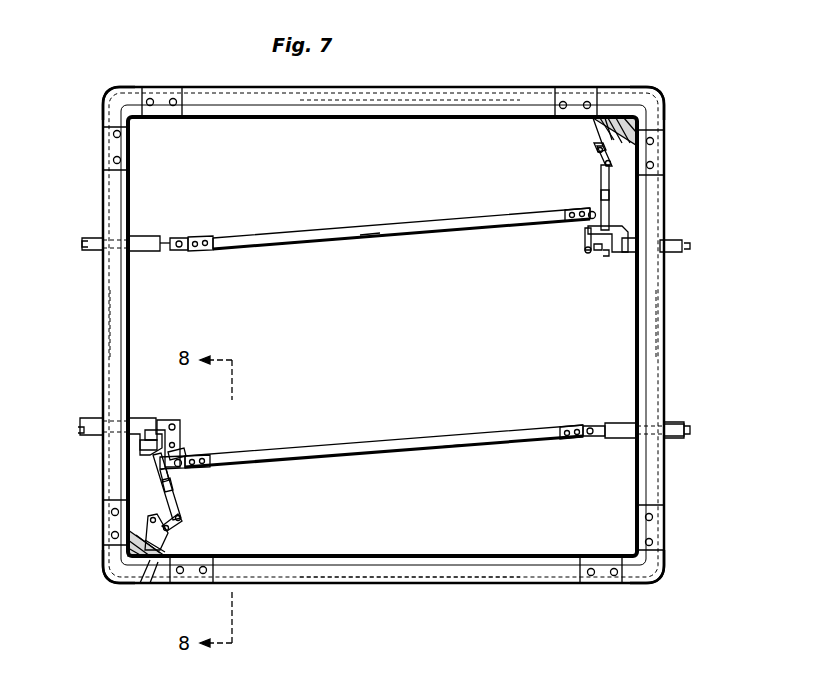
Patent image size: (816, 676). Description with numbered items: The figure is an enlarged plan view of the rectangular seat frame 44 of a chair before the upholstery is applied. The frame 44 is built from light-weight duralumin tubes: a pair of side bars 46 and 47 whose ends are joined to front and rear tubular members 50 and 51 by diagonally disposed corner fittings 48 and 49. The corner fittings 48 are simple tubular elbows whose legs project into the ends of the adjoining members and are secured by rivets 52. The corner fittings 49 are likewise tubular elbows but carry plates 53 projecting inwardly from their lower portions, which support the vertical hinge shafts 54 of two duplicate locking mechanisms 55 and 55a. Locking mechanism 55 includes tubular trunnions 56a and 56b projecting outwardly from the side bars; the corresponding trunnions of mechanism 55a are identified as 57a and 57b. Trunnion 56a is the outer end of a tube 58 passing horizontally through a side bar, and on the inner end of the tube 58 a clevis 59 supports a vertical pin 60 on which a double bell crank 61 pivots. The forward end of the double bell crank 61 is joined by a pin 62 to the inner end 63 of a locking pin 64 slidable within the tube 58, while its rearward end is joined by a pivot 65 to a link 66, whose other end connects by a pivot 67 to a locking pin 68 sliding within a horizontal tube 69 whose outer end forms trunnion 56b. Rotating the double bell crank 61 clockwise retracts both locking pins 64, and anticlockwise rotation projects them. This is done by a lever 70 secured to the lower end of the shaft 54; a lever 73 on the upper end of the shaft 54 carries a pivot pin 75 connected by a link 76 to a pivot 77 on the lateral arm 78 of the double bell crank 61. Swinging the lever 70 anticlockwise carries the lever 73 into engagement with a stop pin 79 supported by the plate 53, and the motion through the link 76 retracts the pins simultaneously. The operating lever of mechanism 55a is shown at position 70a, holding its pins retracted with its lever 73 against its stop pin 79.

The seat frame 44 is at (355, 112).
The side bar 46 is at (118, 322).
The side bar 47 is at (648, 318).
The corner fitting 48 is at (103, 96).
The corner fitting 49 is at (105, 578).
The front tubular member 50 is at (405, 565).
The rear tubular member 51 is at (462, 106).
The rivet 52 is at (178, 96).
The plate 53 is at (600, 130).
The hinge shaft 54 is at (598, 152).
The locking mechanism 55 is at (386, 442).
The locking mechanism 55a is at (406, 240).
The tubular trunnion 56a is at (95, 418).
The tubular trunnion 56b is at (676, 422).
The tubular trunnion 57a is at (640, 238).
The tubular trunnion 57b is at (130, 240).
The tube 58 is at (147, 418).
The clevis 59 is at (145, 447).
The vertical pin 60 is at (588, 232).
The double bell crank 61 is at (587, 246).
The pin 62 is at (594, 252).
The inner end of locking pin 63 is at (185, 240).
The locking pin 64 is at (692, 246).
The pivot 65 is at (593, 212).
The link 66 is at (370, 232).
The pivot 67 is at (588, 438).
The locking pin 68 is at (86, 246).
The horizontal tube 69 is at (618, 423).
The lever 70 is at (140, 580).
The lever position 70a is at (596, 138).
The lever 73 is at (603, 163).
The pivot pin 75 is at (612, 182).
The link 76 is at (611, 196).
The pivot 77 is at (150, 438).
The lateral arm 78 is at (163, 472).
The stop pin 79 is at (654, 150).